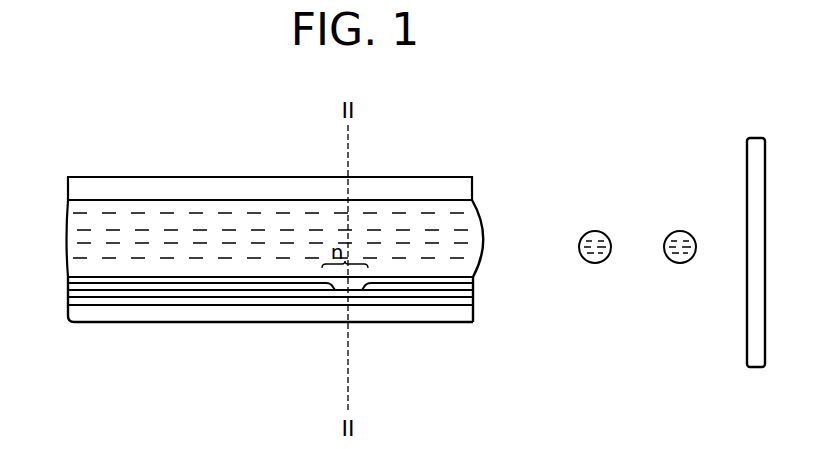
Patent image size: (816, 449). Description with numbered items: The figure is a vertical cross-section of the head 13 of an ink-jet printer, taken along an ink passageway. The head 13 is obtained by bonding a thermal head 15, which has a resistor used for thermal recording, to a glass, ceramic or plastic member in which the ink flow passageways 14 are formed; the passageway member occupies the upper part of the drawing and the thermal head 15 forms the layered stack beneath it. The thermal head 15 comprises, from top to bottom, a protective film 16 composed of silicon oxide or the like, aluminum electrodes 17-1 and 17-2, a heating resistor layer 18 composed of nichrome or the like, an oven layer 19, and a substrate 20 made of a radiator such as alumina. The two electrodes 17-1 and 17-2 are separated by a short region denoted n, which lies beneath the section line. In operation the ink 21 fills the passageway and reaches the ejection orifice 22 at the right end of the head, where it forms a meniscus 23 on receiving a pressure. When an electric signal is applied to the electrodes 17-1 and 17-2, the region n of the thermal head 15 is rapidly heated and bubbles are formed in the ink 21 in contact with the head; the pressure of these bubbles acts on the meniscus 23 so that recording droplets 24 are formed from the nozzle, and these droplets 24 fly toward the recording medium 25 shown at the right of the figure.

The head 13 is at (183, 177).
The ink flow passageways 14 is at (273, 200).
The thermal head 15 is at (52, 279).
The protective film 16 is at (103, 280).
The aluminum electrode 17-1 is at (155, 288).
The aluminum electrode 17-2 is at (445, 290).
The heating resistor layer 18 is at (212, 295).
The oven layer 19 is at (262, 303).
The substrate 20 is at (397, 322).
The ink 21 is at (91, 207).
The ejection orifice 22 is at (475, 272).
The meniscus 23 is at (483, 238).
The recording droplets 24 is at (577, 217).
The recording medium 25 is at (747, 160).